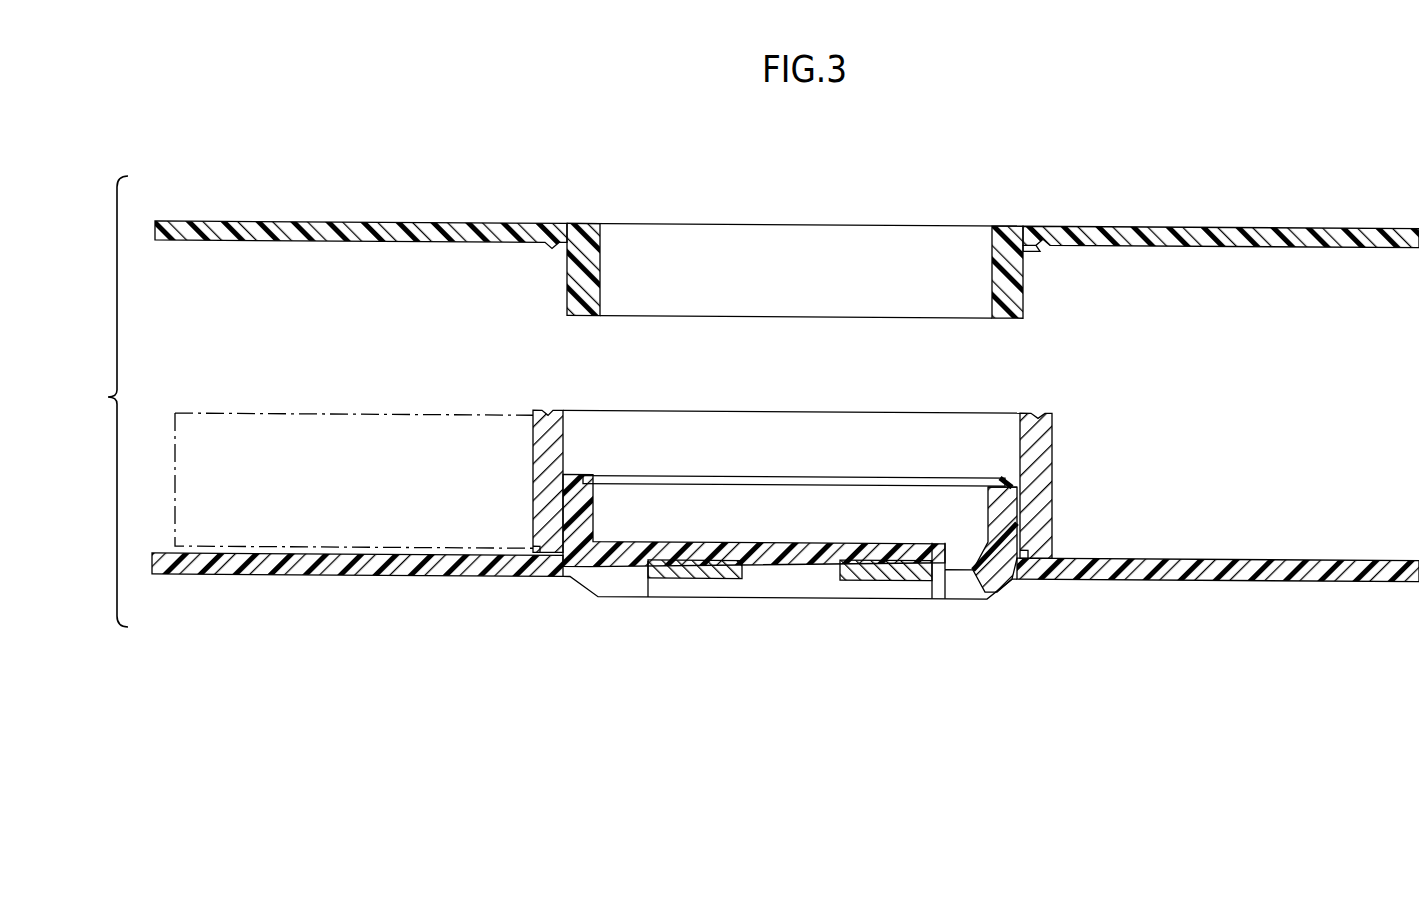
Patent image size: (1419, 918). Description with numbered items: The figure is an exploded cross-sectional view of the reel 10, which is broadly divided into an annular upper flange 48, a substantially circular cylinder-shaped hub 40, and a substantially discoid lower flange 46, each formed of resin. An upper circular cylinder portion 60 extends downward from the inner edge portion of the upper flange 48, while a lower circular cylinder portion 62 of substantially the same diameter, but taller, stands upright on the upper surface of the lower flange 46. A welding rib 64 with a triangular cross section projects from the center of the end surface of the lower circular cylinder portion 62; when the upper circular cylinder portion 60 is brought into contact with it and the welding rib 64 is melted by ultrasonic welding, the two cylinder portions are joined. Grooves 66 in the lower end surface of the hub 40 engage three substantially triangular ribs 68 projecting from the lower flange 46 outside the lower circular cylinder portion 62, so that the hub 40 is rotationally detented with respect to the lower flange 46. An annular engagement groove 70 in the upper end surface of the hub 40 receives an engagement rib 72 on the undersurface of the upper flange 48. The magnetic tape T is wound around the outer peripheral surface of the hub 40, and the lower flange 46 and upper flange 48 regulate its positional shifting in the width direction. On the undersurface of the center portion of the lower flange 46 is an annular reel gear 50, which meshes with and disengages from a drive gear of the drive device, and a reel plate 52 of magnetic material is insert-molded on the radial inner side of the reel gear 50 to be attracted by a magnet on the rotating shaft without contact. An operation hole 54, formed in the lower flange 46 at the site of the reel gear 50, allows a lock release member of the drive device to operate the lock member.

The reel 10 is at (1286, 162).
The upper flange 48 is at (1170, 237).
The lower flange 46 is at (1160, 573).
The upper circular cylinder portion 60 is at (1018, 280).
The engagement rib 72 is at (1040, 250).
The engagement groove 70 is at (1038, 411).
The hub 40 is at (1043, 515).
The lower circular cylinder portion 62 is at (1023, 493).
The welding rib 64 is at (1003, 485).
The grooves 66 is at (533, 548).
The ribs 68 is at (1038, 545).
The reel gear 50 is at (967, 587).
The reel plate 52 is at (870, 565).
The operation hole 54 is at (963, 555).
The magnetic tape T is at (368, 537).